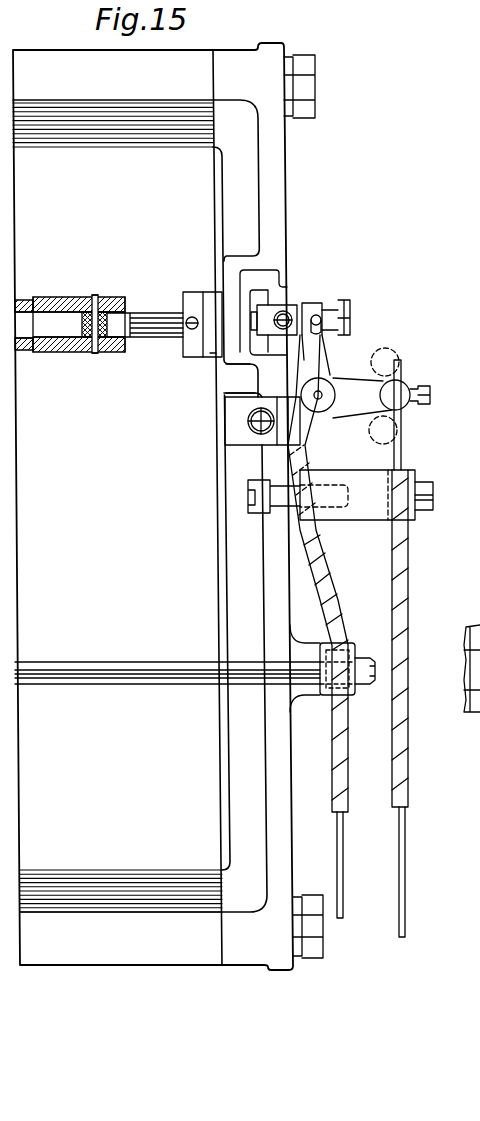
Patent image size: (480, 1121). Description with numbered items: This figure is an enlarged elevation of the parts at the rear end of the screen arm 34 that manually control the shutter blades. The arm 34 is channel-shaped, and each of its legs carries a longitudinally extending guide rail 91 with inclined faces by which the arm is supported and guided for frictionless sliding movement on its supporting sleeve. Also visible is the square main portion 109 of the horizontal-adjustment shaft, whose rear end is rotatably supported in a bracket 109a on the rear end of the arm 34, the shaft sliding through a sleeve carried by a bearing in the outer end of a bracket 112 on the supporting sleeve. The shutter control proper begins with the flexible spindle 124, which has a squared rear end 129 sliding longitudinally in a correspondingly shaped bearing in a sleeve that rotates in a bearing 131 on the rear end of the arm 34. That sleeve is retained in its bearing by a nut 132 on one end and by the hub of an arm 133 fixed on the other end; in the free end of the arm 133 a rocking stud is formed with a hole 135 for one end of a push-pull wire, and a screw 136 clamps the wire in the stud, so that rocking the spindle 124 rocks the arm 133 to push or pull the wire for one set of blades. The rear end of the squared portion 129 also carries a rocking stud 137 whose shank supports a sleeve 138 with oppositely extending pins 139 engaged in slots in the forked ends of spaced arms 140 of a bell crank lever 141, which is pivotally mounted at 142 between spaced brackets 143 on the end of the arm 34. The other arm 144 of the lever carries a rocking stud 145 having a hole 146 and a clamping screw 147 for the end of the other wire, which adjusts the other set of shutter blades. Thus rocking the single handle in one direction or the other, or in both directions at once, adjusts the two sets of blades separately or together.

The arm 34 is at (47, 58).
The guide rail 91 is at (169, 137).
The main portion of shaft 109 is at (192, 684).
The bracket 109a is at (333, 620).
The bracket 112 is at (467, 653).
The flexible spindle 124 is at (23, 306).
The squared rear end 129 is at (150, 312).
The bearing 131 is at (213, 353).
The nut 132 is at (185, 291).
The arm 133 is at (246, 383).
The hole 135 is at (278, 271).
The screw 136 is at (282, 332).
The rocking stud 137 is at (348, 310).
The sleeve 138 is at (307, 303).
The pins 139 is at (318, 315).
The spaced arms 140 is at (352, 320).
The bell crank lever 141 is at (334, 368).
The pivot 142 is at (297, 422).
The spaced brackets 143 is at (317, 355).
The other arm 144 is at (372, 415).
The rocking stud 145 is at (402, 384).
The hole 146 is at (400, 456).
The clamping screw 147 is at (440, 390).